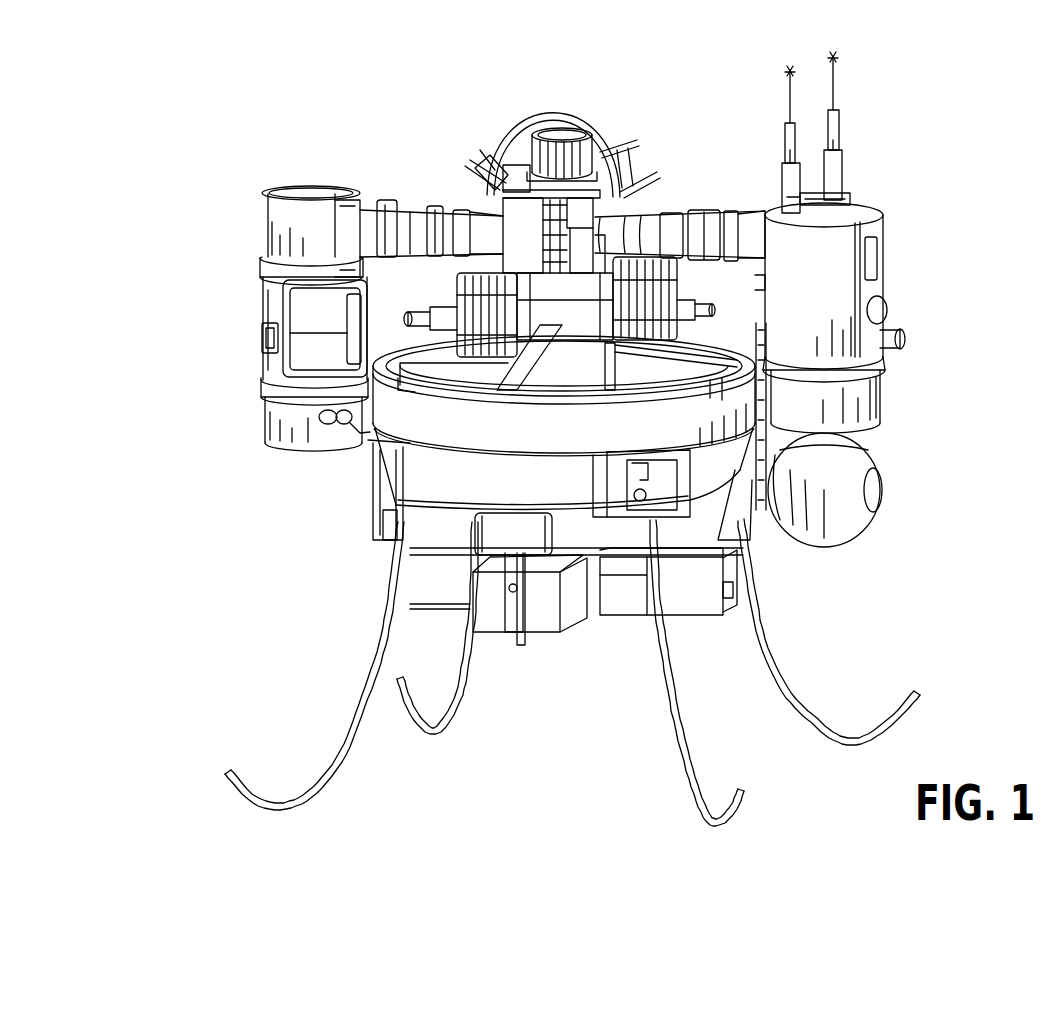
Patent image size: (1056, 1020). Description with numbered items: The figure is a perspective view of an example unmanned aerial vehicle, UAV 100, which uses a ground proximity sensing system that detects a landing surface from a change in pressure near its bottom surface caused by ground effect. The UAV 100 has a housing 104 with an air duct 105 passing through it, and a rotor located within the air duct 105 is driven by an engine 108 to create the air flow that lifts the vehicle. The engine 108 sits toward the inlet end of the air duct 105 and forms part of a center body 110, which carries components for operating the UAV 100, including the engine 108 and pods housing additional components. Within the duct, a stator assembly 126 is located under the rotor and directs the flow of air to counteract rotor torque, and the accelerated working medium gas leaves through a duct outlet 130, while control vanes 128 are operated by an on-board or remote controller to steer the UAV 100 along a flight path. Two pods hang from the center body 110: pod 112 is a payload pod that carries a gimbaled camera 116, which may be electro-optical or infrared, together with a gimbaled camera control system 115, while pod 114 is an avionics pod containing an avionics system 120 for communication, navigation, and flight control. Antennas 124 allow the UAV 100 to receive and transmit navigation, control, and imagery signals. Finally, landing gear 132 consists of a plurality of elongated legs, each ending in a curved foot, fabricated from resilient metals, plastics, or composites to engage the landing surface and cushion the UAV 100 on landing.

The unmanned aerial vehicle 100 is at (268, 96).
The housing 104 is at (372, 497).
The air duct 105 is at (430, 373).
The engine 108 is at (495, 260).
The center body 110 is at (527, 103).
The pod 112 is at (895, 290).
The pod 114 is at (255, 290).
The gimbaled camera control system 115 is at (843, 268).
The gimbaled camera 116 is at (870, 533).
The avionics system 120 is at (268, 364).
The antennas 124 is at (790, 73).
The stator assembly 126 is at (443, 566).
The control vanes 128 is at (567, 620).
The duct outlet 130 is at (505, 538).
The landing gear 132 is at (428, 724).